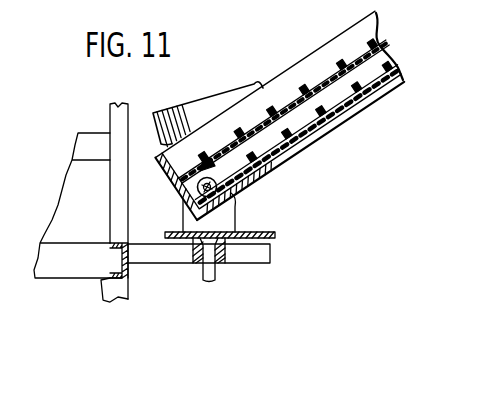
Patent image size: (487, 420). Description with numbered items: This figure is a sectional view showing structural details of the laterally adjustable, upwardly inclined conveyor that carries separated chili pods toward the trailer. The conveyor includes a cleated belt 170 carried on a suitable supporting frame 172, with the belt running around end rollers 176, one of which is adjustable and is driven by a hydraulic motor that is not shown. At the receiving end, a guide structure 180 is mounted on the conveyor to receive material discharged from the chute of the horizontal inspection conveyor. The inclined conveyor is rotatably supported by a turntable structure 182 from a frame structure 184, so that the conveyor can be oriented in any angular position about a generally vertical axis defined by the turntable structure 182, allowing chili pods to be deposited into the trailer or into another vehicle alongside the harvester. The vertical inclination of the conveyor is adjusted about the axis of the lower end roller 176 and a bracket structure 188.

The cleated belt 170 is at (330, 84).
The supporting frame 172 is at (382, 27).
The end rollers 176 is at (249, 183).
The guide structure 180 is at (205, 102).
The turntable structure 182 is at (266, 235).
The frame structure 184 is at (258, 255).
The bracket structure 188 is at (237, 218).